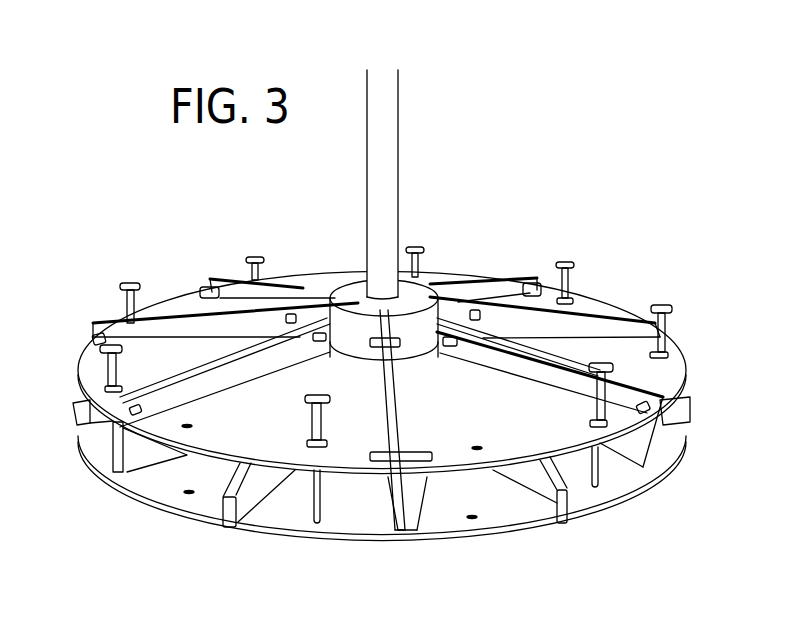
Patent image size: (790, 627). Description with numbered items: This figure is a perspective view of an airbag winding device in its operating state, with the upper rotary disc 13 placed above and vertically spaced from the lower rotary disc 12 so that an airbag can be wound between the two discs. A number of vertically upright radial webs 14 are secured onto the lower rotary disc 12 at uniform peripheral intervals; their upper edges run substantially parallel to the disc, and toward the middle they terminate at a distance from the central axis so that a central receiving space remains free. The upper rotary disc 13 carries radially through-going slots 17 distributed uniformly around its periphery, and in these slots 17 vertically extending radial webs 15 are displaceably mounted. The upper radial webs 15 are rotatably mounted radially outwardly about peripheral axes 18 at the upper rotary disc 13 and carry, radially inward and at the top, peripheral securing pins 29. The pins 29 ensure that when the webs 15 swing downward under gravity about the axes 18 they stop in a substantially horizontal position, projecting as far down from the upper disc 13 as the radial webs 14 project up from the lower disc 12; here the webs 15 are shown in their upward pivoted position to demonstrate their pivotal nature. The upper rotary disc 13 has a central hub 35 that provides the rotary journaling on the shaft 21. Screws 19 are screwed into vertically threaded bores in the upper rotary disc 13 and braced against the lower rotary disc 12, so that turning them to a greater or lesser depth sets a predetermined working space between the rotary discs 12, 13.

The lower rotary disc 12 is at (620, 477).
The upper rotary disc 13 is at (673, 360).
The radial webs 14 is at (247, 500).
The radial webs 15 is at (207, 377).
The radially through-going slots 17 is at (380, 390).
The peripheral axes 18 is at (97, 338).
The screws 19 is at (255, 257).
The shaft 21 is at (390, 135).
The peripheral securing pins 29 is at (320, 333).
The central hub 35 is at (437, 315).